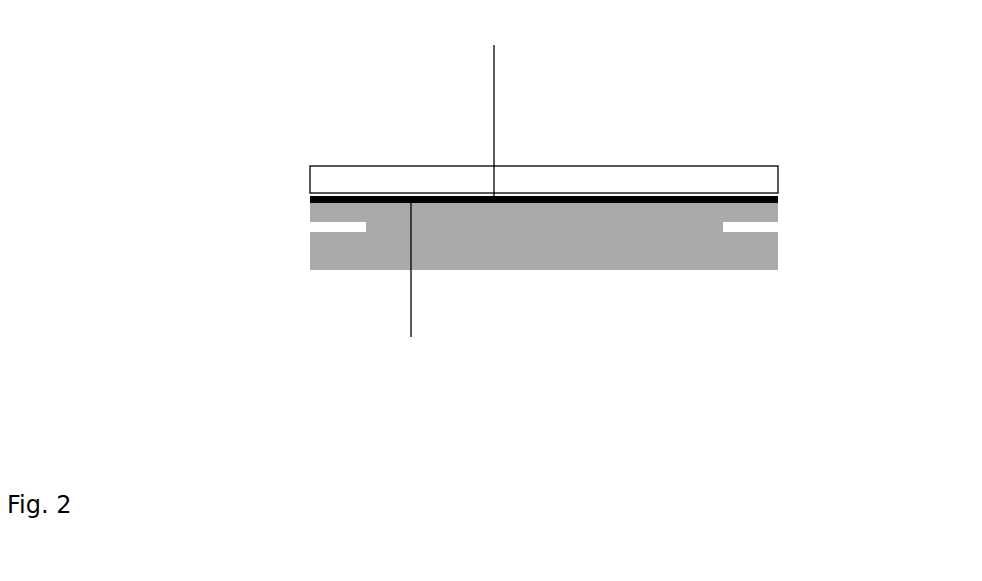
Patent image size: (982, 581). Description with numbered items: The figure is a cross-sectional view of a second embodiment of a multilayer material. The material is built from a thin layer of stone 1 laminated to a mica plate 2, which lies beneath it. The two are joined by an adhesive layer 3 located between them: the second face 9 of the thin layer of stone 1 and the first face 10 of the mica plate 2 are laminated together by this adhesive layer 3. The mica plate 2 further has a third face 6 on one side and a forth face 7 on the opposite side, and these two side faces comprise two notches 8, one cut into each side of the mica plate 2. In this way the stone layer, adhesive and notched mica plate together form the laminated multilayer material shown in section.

The thin layer of stone 1 is at (378, 178).
The mica plate 2 is at (640, 245).
The adhesive layer 3 is at (778, 198).
The third face 6 is at (310, 253).
The forth face 7 is at (778, 253).
The notches 8 is at (330, 227).
The second face 9 is at (492, 103).
The first face 10 is at (407, 289).